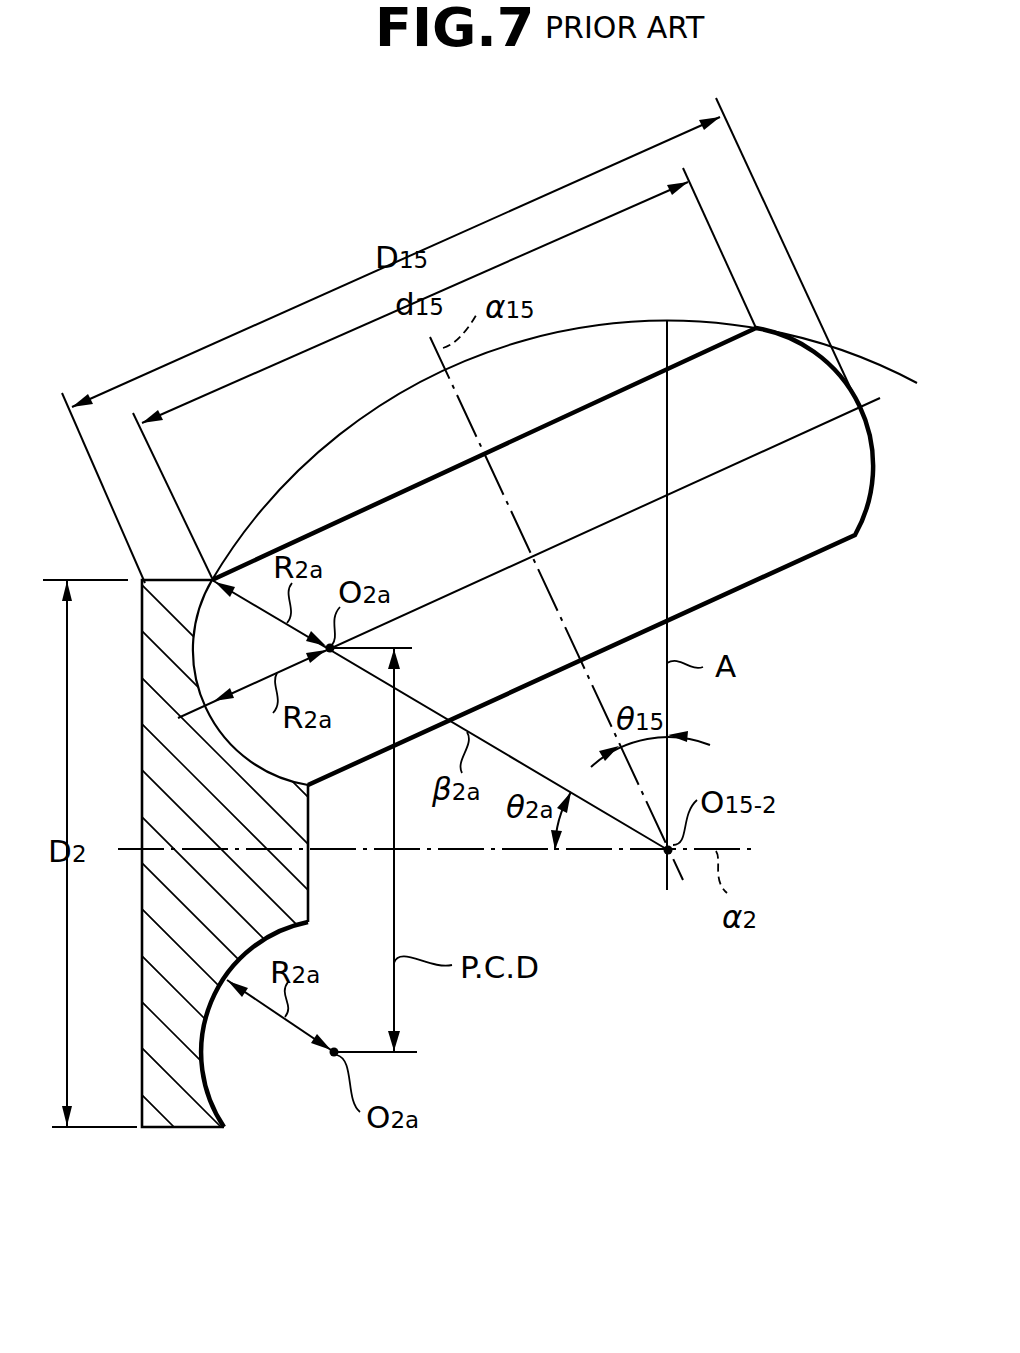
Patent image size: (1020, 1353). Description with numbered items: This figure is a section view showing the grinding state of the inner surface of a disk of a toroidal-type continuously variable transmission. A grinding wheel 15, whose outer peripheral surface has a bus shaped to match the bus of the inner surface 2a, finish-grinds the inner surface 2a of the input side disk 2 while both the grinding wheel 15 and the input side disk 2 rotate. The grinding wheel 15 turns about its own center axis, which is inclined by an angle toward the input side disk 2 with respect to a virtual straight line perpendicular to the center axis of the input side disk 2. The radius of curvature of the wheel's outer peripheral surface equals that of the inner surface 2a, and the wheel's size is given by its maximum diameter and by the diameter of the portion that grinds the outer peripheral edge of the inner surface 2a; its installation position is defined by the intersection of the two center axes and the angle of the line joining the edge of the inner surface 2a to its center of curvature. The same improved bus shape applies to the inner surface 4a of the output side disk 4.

The grinding wheel 15 is at (772, 557).
The input side disk 2 is at (348, 855).
The output side disk 4 is at (193, 1028).
The inner surface 2a is at (234, 890).
The inner surface 4a is at (217, 1085).